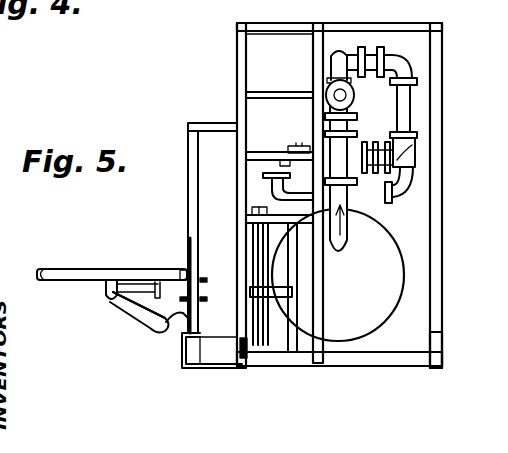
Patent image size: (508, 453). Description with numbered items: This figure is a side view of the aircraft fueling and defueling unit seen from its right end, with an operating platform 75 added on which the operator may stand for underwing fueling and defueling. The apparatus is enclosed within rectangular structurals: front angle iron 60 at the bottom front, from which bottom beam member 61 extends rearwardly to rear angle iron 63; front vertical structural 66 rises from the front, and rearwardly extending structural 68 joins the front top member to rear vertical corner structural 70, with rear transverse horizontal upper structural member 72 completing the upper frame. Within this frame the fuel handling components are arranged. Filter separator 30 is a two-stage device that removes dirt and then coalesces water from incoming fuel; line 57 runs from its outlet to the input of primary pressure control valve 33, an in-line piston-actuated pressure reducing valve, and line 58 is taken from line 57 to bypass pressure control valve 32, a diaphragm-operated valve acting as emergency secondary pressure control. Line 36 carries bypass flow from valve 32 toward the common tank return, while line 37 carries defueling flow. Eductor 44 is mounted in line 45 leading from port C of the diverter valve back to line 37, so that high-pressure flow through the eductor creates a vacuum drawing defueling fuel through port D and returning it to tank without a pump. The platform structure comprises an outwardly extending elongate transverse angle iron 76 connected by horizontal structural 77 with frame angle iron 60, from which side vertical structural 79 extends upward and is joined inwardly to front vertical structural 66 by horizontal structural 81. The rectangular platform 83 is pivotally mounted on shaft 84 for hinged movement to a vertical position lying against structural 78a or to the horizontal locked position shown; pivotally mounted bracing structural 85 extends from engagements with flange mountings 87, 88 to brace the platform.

The filter separator 30 is at (386, 301).
The bypass pressure control valve 32 is at (330, 74).
The primary pressure control valve 33 is at (357, 148).
The line 36 is at (334, 50).
The line 37 is at (372, 47).
The eductor 44 is at (416, 156).
The line 45 is at (273, 189).
The line 57 is at (348, 238).
The line 58 is at (327, 92).
The front angle iron 60 is at (246, 361).
The bottom beam member 61 is at (349, 364).
The rear angle iron 63 is at (443, 354).
The front vertical structural 66 is at (238, 80).
The rearwardly extending structural 68 is at (340, 30).
The rear vertical corner structural 70 is at (432, 68).
The rear transverse horizontal upper structural member 72 is at (443, 26).
The platform 75 is at (45, 262).
The transverse angle iron 76 is at (182, 353).
The horizontal structural 77 is at (222, 358).
The structural 78a is at (190, 136).
The side vertical structural 79 is at (191, 243).
The horizontal structural 81 is at (218, 123).
The rectangular platform 83 is at (92, 272).
The shaft 84 is at (180, 273).
The bracing structural 85 is at (132, 309).
The flange mounting 87 is at (156, 324).
The flange mounting 88 is at (105, 296).
The port C is at (313, 150).
The port D is at (415, 147).